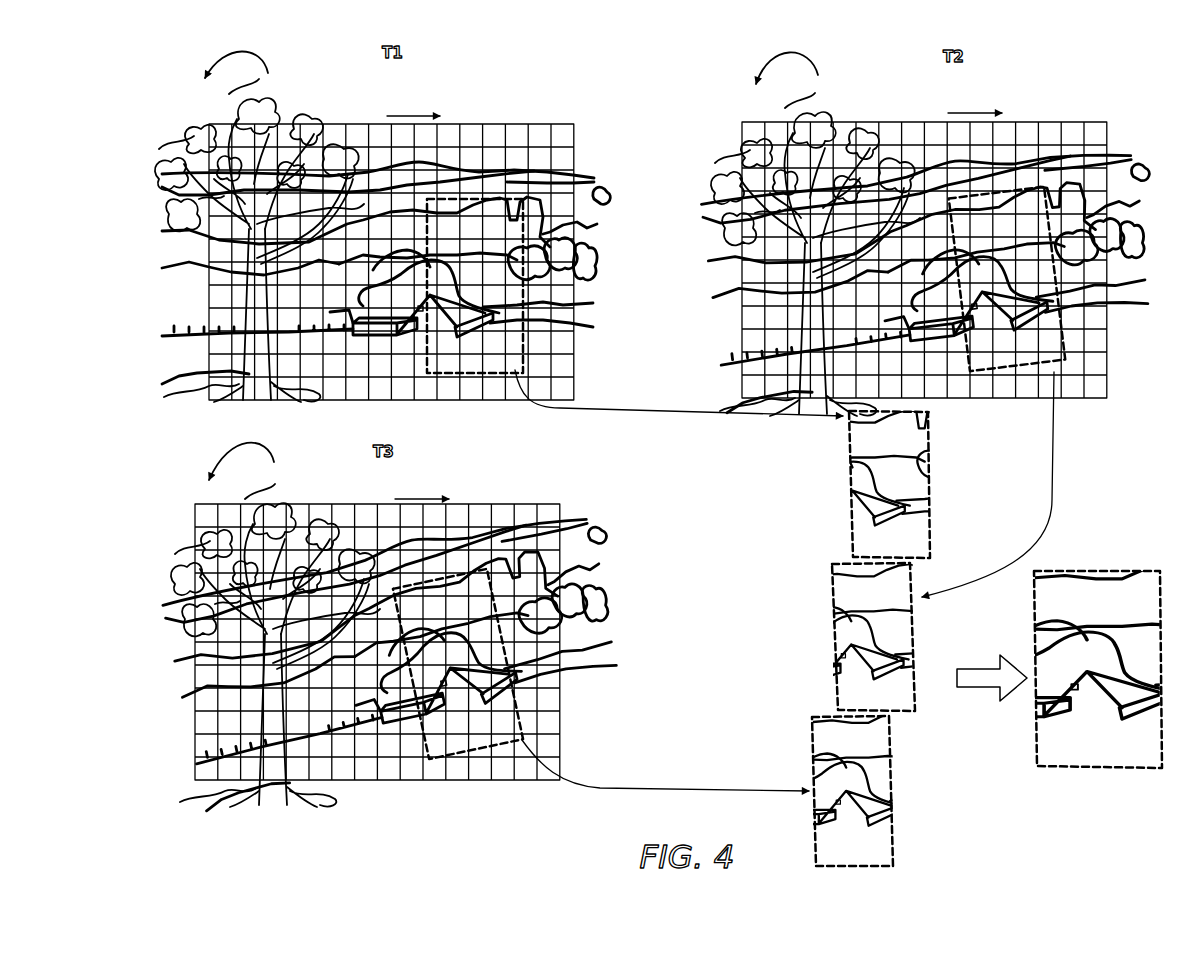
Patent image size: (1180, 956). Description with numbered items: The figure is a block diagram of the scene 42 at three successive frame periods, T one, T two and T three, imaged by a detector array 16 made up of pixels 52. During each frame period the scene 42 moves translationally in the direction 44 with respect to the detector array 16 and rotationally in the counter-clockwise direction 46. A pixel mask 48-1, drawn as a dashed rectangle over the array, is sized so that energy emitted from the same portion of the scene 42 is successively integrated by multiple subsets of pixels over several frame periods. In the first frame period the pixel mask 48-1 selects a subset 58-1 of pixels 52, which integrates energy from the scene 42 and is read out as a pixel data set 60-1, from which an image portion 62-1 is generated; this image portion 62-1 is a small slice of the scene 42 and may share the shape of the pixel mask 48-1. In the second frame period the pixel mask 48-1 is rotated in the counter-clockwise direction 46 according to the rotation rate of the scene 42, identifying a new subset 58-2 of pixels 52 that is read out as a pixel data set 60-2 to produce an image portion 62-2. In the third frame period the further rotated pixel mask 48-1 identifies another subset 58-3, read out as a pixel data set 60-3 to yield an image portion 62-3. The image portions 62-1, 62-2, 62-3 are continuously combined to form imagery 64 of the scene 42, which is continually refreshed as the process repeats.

The detector array 16 is at (562, 124).
The scene 42 is at (172, 104).
The direction 44 is at (415, 115).
The counter-clockwise direction 46 is at (268, 73).
The pixel mask 48-1 is at (455, 378).
The pixels 52 is at (567, 339).
The subset of pixels 58-1 is at (500, 233).
The subset of pixels 58-2 is at (1042, 236).
The subset of pixels 58-3 is at (480, 611).
The pixel data set 60-1 is at (638, 407).
The pixel data set 60-2 is at (1053, 465).
The pixel data set 60-3 is at (668, 788).
The image portion 62-1 is at (849, 449).
The image portion 62-2 is at (832, 590).
The image portion 62-3 is at (812, 744).
The imagery 64 is at (1142, 571).